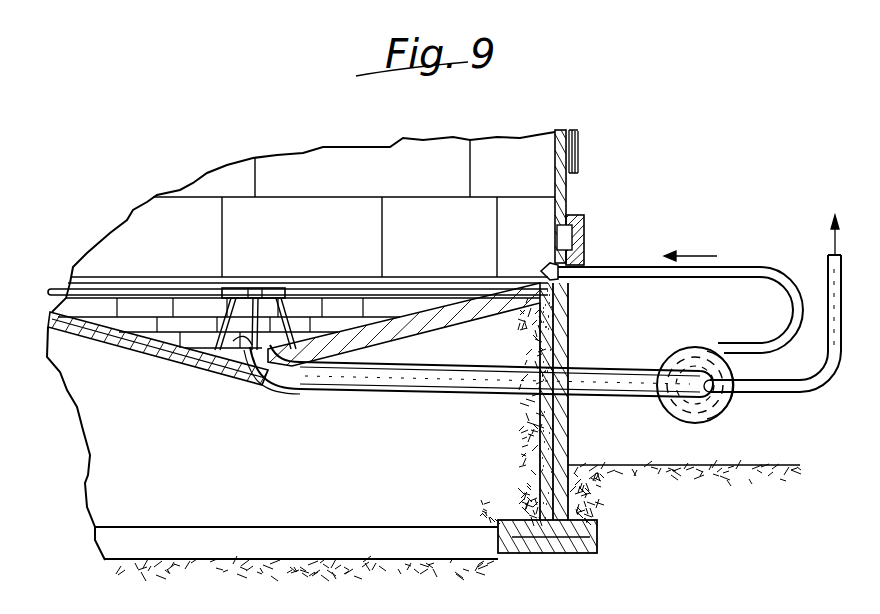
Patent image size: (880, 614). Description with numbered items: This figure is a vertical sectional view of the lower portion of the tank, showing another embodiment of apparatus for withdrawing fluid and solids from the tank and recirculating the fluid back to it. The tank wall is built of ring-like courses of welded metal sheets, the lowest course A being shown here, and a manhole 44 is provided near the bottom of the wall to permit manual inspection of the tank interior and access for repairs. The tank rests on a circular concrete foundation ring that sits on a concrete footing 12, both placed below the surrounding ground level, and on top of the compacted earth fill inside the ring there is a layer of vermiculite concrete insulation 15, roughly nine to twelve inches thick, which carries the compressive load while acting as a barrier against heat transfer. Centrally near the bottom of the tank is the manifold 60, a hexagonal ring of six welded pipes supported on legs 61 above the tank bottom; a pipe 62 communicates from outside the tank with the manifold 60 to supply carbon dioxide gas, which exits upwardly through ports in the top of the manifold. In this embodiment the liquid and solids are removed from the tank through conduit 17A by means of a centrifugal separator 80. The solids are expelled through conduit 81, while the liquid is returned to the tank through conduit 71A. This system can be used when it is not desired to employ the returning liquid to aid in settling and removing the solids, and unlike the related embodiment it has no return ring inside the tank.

The tank wall course A is at (540, 214).
The manhole 44 is at (584, 235).
The return conduit 71A is at (742, 267).
The centrifugal separator 80 is at (668, 423).
The solids discharge conduit 81 is at (797, 393).
The withdrawal conduit 17A is at (323, 387).
The concrete footing 12 is at (527, 553).
The vermiculite concrete insulation 15 is at (108, 337).
The gas supply pipe 62 is at (64, 288).
The manifold 60 is at (248, 289).
The legs 61 is at (234, 341).